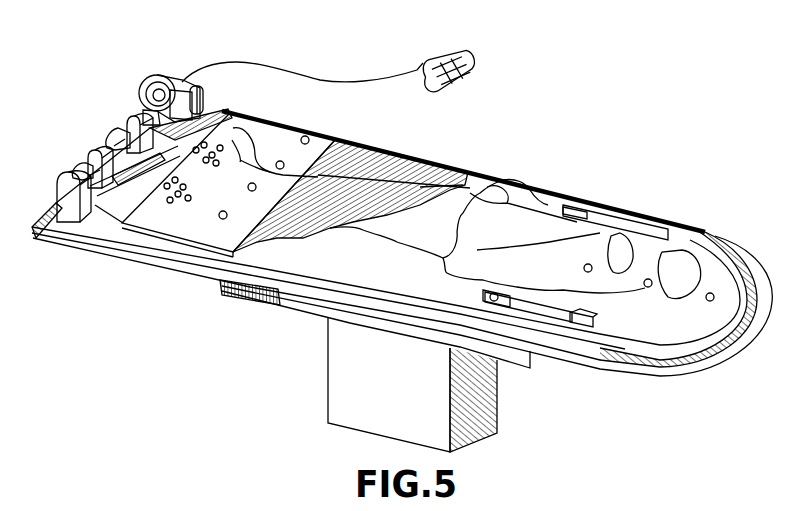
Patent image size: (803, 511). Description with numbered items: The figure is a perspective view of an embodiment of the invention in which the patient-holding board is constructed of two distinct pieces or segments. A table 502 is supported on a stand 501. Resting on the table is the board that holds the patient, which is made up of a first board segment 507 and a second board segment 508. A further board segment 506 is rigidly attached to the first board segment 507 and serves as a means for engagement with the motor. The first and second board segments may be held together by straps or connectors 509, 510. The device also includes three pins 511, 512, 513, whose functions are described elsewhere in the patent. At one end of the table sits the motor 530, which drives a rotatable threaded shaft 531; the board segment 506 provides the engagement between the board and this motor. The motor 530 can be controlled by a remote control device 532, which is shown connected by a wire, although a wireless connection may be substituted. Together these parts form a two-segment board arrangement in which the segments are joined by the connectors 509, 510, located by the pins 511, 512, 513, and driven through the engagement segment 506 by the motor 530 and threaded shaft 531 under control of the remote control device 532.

The stand 501 is at (343, 400).
The table 502 is at (100, 227).
The board segment 506 is at (272, 136).
The first board segment 507 is at (467, 183).
The second board segment 508 is at (627, 330).
The strap or connector 509 is at (627, 235).
The strap or connector 510 is at (556, 312).
The pin 511 is at (710, 293).
The pin 512 is at (588, 264).
The pin 513 is at (648, 279).
The motor 530 is at (163, 75).
The rotatable threaded shaft 531 is at (123, 115).
The remote control device 532 is at (450, 50).